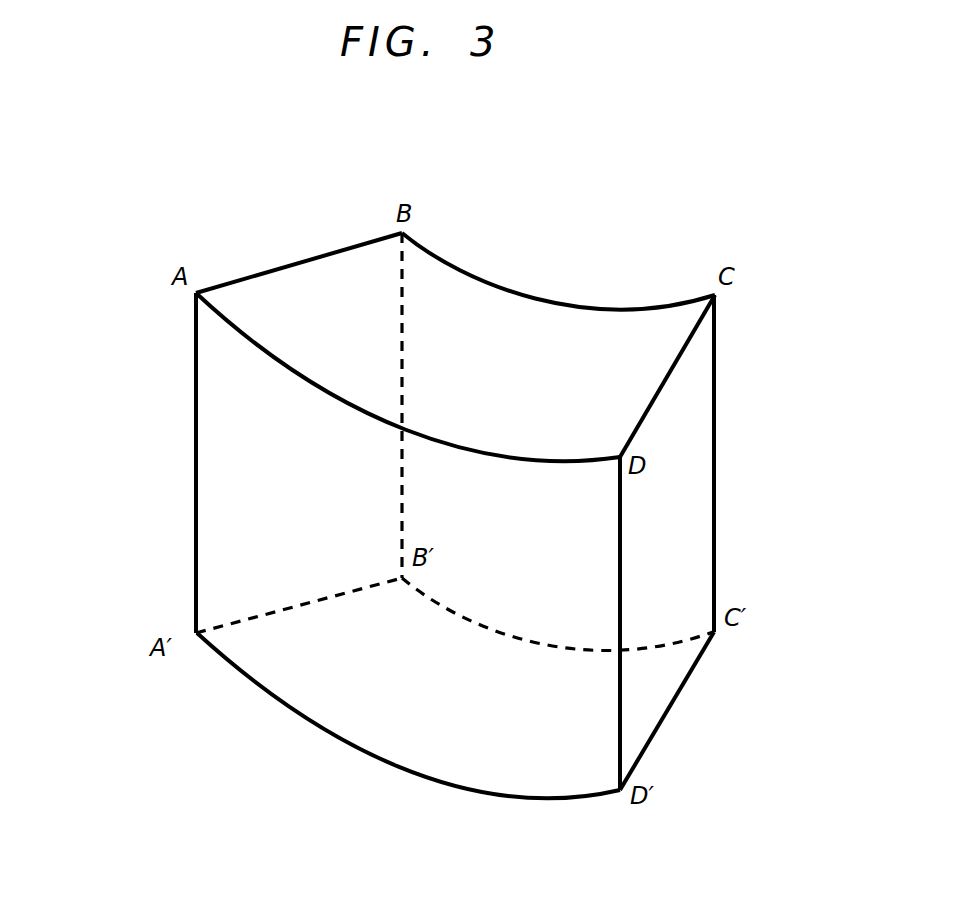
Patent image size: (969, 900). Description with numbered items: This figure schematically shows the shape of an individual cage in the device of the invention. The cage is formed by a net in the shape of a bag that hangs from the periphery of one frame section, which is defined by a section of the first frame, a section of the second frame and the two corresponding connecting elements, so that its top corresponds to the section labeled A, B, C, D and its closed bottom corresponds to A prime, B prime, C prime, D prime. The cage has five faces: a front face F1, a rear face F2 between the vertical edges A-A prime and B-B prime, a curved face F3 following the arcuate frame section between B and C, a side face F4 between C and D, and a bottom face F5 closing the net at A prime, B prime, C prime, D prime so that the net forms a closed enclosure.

The face F1 is at (246, 522).
The face F2 is at (273, 306).
The face F3 is at (584, 346).
The face F4 is at (678, 535).
The face F5 is at (485, 758).